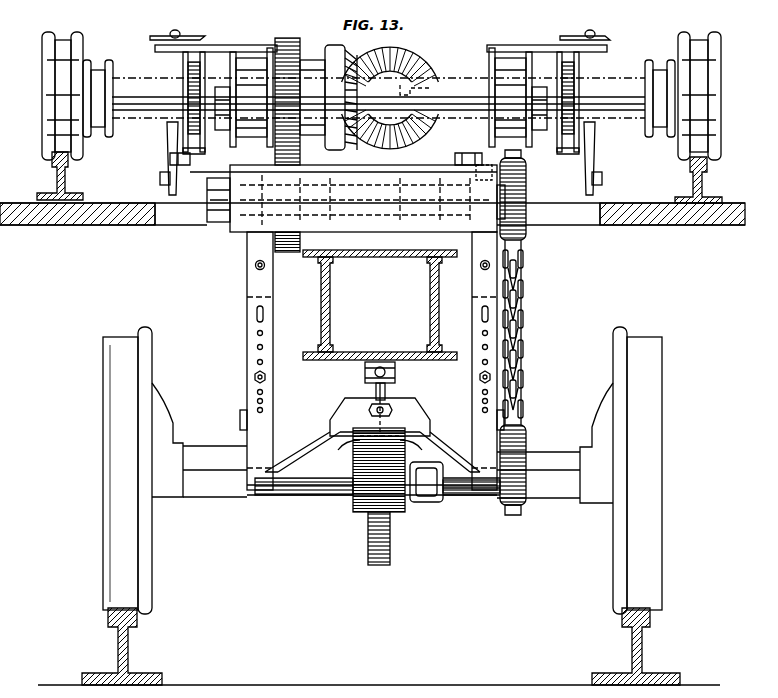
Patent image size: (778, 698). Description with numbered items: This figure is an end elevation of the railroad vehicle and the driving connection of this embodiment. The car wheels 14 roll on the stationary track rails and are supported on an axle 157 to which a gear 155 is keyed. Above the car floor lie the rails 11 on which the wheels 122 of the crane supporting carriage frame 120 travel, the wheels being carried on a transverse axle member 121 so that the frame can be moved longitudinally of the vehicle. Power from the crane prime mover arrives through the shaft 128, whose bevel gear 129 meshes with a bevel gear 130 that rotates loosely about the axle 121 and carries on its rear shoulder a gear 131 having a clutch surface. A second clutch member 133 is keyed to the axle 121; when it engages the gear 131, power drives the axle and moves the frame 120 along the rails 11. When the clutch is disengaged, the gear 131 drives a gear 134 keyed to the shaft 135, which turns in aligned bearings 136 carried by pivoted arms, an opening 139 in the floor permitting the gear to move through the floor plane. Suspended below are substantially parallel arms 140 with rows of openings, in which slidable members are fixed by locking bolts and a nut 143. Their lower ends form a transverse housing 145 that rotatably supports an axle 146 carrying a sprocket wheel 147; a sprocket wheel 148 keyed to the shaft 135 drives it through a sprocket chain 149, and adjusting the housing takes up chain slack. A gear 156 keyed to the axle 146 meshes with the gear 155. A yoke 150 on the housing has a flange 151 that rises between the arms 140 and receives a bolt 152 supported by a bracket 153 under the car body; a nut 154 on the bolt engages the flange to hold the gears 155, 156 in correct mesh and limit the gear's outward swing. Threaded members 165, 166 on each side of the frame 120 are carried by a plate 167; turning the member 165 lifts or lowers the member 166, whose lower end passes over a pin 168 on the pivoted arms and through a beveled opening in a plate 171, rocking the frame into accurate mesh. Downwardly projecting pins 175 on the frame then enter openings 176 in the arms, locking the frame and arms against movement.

The rails 11 is at (62, 181).
The wheels 14 is at (107, 521).
The crane supporting carriage frame 120 is at (552, 63).
The transverse axle member 121 is at (448, 114).
The wheels 122 is at (60, 54).
The shaft 128 is at (432, 86).
The bevel gear 129 is at (412, 53).
The bevel gear 130 is at (348, 56).
The gear 131 is at (290, 40).
The second clutch member 133 is at (252, 66).
The gear 134 is at (285, 252).
The shaft 135 is at (348, 196).
The bearing 136 is at (440, 192).
The opening 139 is at (176, 223).
The arms 140 is at (250, 285).
The nut 143 is at (266, 378).
The transverse housing 145 is at (302, 496).
The axle 146 is at (470, 500).
The sprocket wheel 147 is at (521, 460).
The sprocket wheel 148 is at (524, 233).
The sprocket chain 149 is at (523, 330).
The yoke 150 is at (432, 437).
The flange 151 is at (404, 413).
The bolt 152 is at (386, 380).
The bracket 153 is at (365, 377).
The nut 154 is at (366, 411).
The gear 155 is at (391, 553).
The gear 156 is at (356, 505).
The axle 157 is at (560, 458).
The threaded member 165 is at (178, 33).
The threaded member 166 is at (186, 128).
The plate 167 is at (214, 46).
The pin 168 is at (160, 180).
The plate 171 is at (180, 151).
The downwardly projecting pins 175 is at (472, 158).
The openings 176 is at (490, 168).